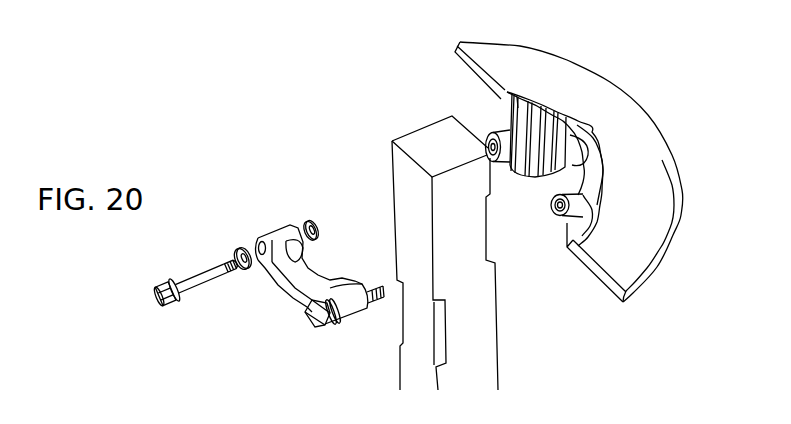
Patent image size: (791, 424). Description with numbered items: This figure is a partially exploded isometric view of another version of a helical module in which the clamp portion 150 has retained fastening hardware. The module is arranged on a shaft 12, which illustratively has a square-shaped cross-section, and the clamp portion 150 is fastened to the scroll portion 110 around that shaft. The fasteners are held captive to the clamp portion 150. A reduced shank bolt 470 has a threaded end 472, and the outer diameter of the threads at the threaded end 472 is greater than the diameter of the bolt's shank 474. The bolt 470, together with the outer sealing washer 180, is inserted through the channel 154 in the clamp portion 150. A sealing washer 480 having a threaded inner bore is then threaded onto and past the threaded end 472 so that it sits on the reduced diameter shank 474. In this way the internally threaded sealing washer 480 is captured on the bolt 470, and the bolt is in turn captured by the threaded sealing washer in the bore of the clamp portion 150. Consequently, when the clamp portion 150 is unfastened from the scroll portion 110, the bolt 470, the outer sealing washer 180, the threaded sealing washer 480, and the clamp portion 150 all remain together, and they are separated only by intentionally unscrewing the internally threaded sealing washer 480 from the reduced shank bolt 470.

The shaft 12 is at (473, 343).
The scroll portion 110 is at (608, 123).
The clamp portion 150 is at (350, 312).
The channel 154 is at (261, 270).
The outer sealing washer 180 is at (238, 250).
The reduced shank bolt 470 is at (163, 297).
The threaded end 472 is at (232, 280).
The shank 474 is at (203, 268).
The sealing washer 480 is at (310, 213).